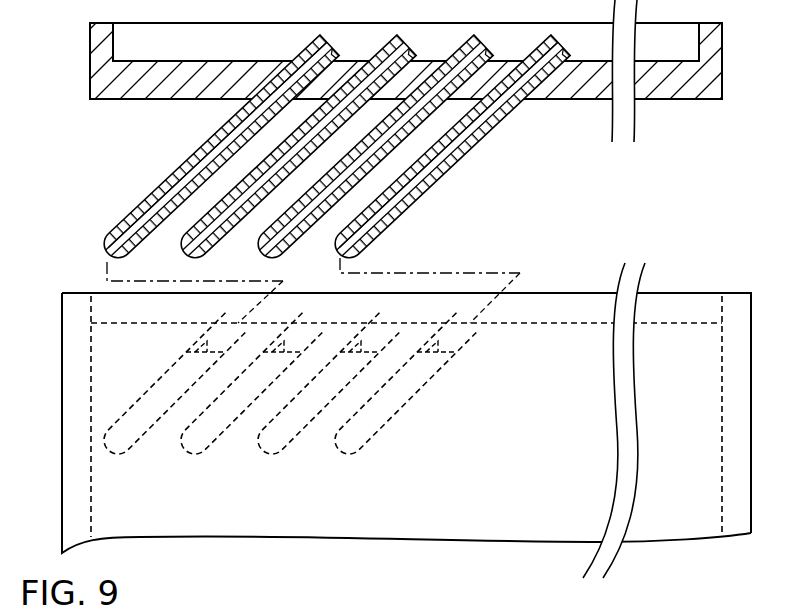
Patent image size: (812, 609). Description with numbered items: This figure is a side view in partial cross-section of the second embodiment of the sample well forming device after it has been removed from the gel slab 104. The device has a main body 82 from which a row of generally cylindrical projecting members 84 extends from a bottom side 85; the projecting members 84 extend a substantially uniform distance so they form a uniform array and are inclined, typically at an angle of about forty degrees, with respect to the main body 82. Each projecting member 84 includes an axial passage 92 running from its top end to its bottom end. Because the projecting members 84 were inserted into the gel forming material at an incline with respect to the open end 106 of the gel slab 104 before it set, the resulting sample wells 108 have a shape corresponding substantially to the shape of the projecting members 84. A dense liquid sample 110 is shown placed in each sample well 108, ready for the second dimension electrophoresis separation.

The main body 82 is at (722, 58).
The projecting members 84 is at (142, 206).
The bottom side 85 is at (565, 100).
The axial passage 92 is at (133, 220).
The gel slab 104 is at (697, 320).
The open end 106 is at (686, 293).
The sample wells 108 is at (473, 337).
The liquid sample 110 is at (186, 355).